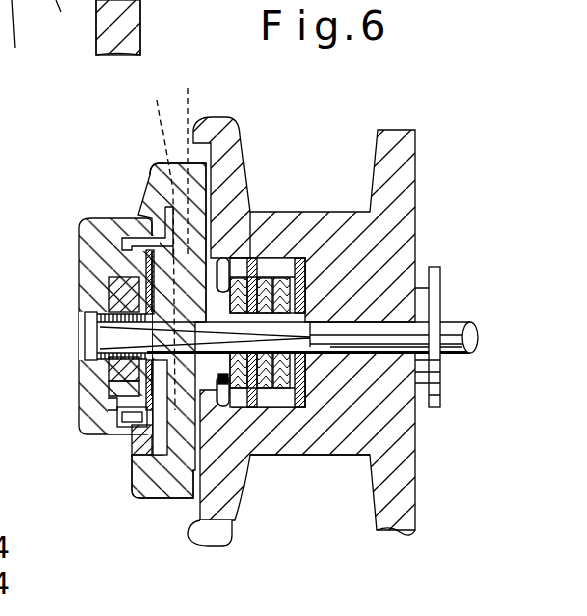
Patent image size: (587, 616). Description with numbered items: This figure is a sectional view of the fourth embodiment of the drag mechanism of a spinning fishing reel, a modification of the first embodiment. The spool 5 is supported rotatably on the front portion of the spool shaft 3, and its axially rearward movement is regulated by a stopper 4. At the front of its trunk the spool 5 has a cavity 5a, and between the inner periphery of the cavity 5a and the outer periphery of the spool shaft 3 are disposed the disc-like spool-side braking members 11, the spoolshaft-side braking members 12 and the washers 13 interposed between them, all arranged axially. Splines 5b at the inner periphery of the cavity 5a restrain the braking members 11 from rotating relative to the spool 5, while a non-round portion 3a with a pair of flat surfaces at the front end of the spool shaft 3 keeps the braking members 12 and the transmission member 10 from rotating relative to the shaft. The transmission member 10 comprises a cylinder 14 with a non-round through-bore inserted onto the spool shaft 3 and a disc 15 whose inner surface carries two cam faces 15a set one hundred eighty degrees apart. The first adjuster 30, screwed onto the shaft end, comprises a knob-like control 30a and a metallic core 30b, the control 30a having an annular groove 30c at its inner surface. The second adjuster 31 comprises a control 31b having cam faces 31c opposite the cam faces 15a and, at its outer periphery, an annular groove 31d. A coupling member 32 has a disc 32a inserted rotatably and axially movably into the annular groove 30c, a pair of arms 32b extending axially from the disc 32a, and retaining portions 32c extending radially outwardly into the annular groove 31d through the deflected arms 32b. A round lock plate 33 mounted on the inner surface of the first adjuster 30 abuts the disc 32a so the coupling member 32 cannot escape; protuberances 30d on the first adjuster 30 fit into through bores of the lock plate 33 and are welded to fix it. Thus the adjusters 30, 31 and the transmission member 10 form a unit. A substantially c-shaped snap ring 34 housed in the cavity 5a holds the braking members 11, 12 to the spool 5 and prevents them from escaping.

The spool shaft 3 is at (393, 312).
The non-round portion 3a is at (100, 335).
The stopper 4 is at (441, 302).
The spool 5 is at (352, 211).
The cavity 5a is at (304, 288).
The splines 5b is at (244, 262).
The transmission member 10 is at (98, 262).
The spool-side braking members 11 is at (248, 410).
The spoolshaft-side braking members 12 is at (270, 410).
The washers 13 is at (238, 410).
The cylinder 14 is at (232, 262).
The disc 15 is at (145, 243).
The cam faces 15a is at (154, 241).
The first adjuster 30 is at (82, 366).
The control 30a is at (115, 410).
The metallic core 30b is at (100, 378).
The annular groove 30c is at (150, 440).
The protuberances 30d is at (100, 396).
The second adjuster 31 is at (158, 163).
The control 31b is at (148, 186).
The cam faces 31c is at (194, 156).
The annular groove 31d is at (210, 205).
The coupling member 32 is at (158, 446).
The disc 32a is at (140, 422).
The arms 32b is at (160, 440).
The retaining portions 32c is at (222, 542).
The lock plate 33 is at (128, 418).
The snap ring 34 is at (236, 460).